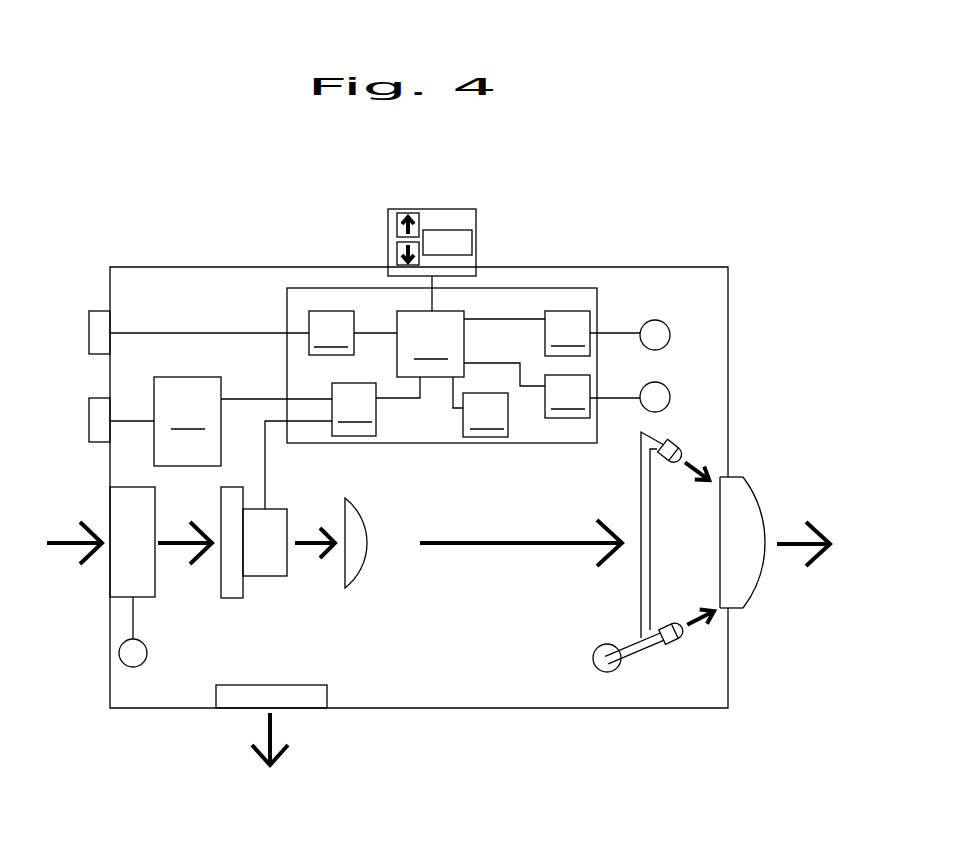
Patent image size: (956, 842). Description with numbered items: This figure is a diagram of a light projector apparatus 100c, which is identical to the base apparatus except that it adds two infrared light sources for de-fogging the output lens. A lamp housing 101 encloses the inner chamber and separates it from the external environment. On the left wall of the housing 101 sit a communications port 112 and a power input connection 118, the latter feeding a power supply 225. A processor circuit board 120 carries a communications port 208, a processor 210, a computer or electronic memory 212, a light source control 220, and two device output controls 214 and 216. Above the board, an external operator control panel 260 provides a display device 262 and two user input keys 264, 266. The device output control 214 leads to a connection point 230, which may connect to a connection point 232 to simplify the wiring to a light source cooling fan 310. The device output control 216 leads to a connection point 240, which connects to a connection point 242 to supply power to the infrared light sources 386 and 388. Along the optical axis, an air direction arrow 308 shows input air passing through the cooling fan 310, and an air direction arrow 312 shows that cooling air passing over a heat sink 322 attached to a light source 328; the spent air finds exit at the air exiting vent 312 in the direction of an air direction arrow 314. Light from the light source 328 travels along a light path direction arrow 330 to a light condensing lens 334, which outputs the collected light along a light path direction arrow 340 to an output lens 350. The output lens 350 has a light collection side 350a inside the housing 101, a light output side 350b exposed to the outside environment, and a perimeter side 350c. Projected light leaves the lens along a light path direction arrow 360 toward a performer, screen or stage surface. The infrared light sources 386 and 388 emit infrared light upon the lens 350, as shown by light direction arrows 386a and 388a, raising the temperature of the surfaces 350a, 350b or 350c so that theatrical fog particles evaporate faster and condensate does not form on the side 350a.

The apparatus 100c is at (225, 230).
The lamp housing 101 is at (287, 255).
The communications port 112 is at (93, 302).
The power input connection 118 is at (91, 396).
The processor circuit board 120 is at (282, 317).
The communications port 208 is at (353, 333).
The processor 210 is at (430, 326).
The computer or electronic memory 212 is at (480, 407).
The device output control 214 is at (527, 333).
The device output control 216 is at (527, 390).
The light source control 220 is at (342, 443).
The power supply 225 is at (243, 421).
The external operator control panel 260 is at (482, 215).
The display device 262 is at (453, 225).
The user input key 264 is at (395, 222).
The user input key 266 is at (395, 255).
The connection point 230 is at (680, 320).
The connection point 240 is at (680, 383).
The connection point 232 is at (135, 670).
The connection point 242 is at (593, 648).
The air direction arrow 308 is at (68, 528).
The light source cooling fan 310 is at (160, 592).
The air direction arrow / air exiting vent 312 is at (187, 528).
The air direction arrow 314 is at (262, 727).
The heat sink 322 is at (232, 603).
The light source 328 is at (272, 583).
The light path direction arrow 330 is at (317, 528).
The light condensing lens 334 is at (352, 583).
The light path direction arrow 340 is at (487, 530).
The output lens 350 is at (713, 575).
The light collection side 350a is at (717, 535).
The light output side 350b is at (760, 497).
The perimeter side 350c is at (735, 472).
The light path direction arrow 360 is at (790, 555).
The infrared light source 386 is at (667, 443).
The light direction arrow 386a is at (702, 462).
The infrared light source 388 is at (672, 642).
The light direction arrow 388a is at (703, 627).